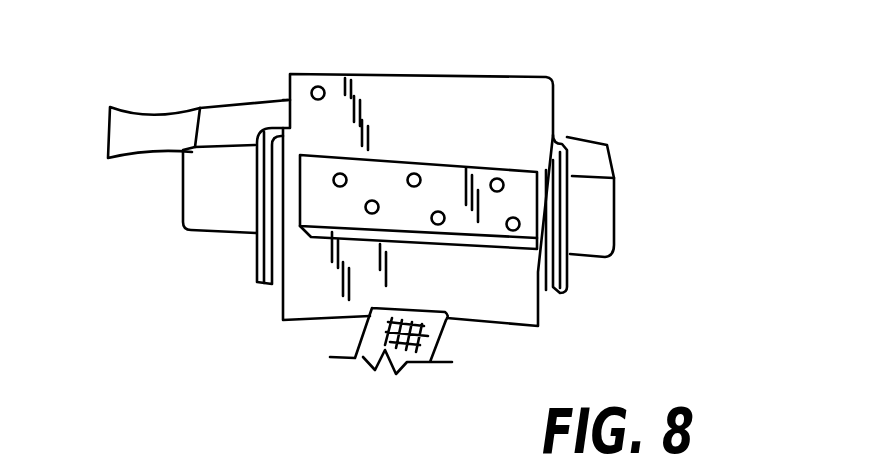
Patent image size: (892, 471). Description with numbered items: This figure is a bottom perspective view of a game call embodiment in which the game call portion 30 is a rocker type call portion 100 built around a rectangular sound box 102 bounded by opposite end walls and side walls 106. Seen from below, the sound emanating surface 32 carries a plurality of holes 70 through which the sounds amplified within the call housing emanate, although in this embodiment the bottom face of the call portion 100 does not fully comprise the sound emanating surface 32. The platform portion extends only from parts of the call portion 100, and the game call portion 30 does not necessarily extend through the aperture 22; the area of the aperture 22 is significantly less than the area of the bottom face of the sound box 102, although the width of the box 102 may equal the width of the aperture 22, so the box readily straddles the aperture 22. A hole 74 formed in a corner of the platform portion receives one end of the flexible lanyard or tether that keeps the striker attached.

The aperture 22 is at (342, 216).
The game call portion 30 is at (611, 133).
The sound emanating surface 32 is at (447, 186).
The holes 70 is at (415, 174).
The hole 74 is at (322, 87).
The rocker type call portion 100 is at (637, 212).
The sound box 102 is at (240, 198).
The side walls 106 is at (235, 117).